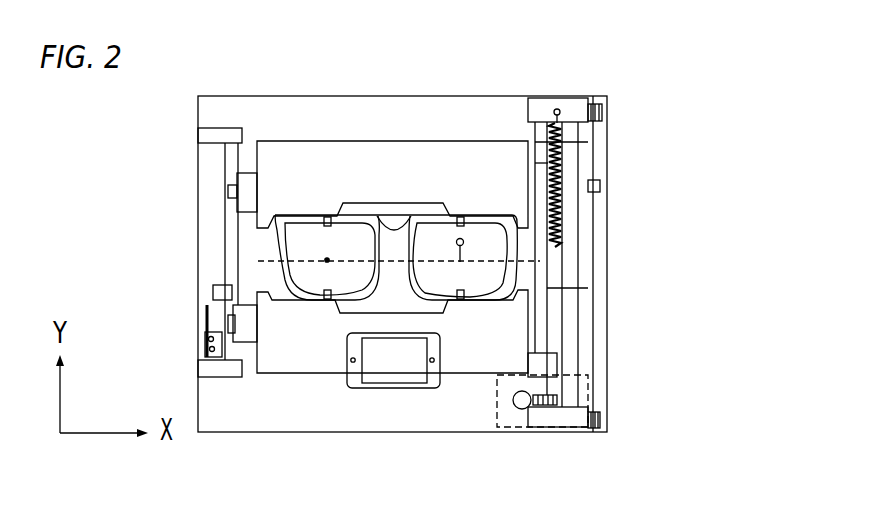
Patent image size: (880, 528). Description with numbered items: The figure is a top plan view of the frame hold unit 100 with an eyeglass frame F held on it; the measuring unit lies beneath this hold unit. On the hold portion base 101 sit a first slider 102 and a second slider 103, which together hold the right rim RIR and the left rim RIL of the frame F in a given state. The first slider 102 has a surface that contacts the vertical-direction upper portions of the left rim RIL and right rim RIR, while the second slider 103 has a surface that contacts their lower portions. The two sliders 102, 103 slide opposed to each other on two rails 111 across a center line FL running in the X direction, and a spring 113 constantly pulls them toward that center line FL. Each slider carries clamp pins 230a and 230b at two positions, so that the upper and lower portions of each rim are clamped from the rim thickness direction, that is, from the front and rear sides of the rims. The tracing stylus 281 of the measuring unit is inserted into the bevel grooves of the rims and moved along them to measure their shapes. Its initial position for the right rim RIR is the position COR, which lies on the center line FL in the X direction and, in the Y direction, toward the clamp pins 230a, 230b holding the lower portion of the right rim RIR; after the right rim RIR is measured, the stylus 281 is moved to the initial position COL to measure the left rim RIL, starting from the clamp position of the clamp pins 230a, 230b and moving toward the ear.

The frame hold unit 100 is at (641, 163).
The hold portion base 101 is at (246, 116).
The first slider 102 is at (290, 173).
The second slider 103 is at (259, 372).
The rails 111 is at (228, 208).
The spring 113 is at (557, 245).
The clamp pin 230a is at (437, 248).
The clamp pin 230b is at (327, 216).
The tracing stylus 281 is at (510, 240).
The eyeglass frame F is at (401, 212).
The center line FL is at (300, 292).
The left rim RIL is at (257, 262).
The right rim RIR is at (545, 262).
The initial position for left rim COL is at (327, 261).
The initial position for right rim COR is at (461, 247).